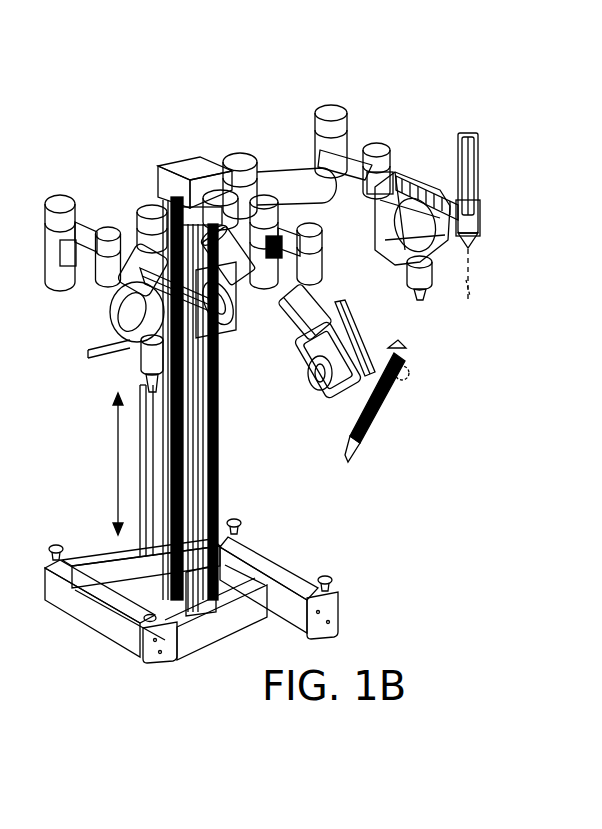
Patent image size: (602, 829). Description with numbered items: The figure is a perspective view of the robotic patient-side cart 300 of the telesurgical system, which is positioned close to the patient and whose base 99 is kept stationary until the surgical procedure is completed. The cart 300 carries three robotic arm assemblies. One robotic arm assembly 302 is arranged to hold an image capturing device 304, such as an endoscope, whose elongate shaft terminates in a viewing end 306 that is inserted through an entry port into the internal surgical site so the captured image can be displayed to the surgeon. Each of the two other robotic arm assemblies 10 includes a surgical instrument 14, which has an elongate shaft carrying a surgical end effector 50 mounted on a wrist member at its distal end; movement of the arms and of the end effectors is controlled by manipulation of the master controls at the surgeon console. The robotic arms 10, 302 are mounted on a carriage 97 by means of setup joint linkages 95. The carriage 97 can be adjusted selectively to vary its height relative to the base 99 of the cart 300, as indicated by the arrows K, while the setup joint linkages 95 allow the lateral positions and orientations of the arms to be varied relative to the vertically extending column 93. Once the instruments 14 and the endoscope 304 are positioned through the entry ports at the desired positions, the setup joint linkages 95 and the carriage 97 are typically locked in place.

The cart 300 is at (190, 115).
The setup joint linkages 95 is at (88, 230).
The robotic arm assembly 10 is at (495, 184).
The surgical instrument 14 is at (474, 248).
The surgical end effector 50 is at (472, 292).
The robotic arm assembly 302 is at (404, 357).
The image capturing device 304 is at (400, 393).
The viewing end 306 is at (345, 465).
The carriage 97 is at (220, 326).
The column 93 is at (221, 463).
The base 99 is at (287, 571).
The arrows K is at (120, 457).